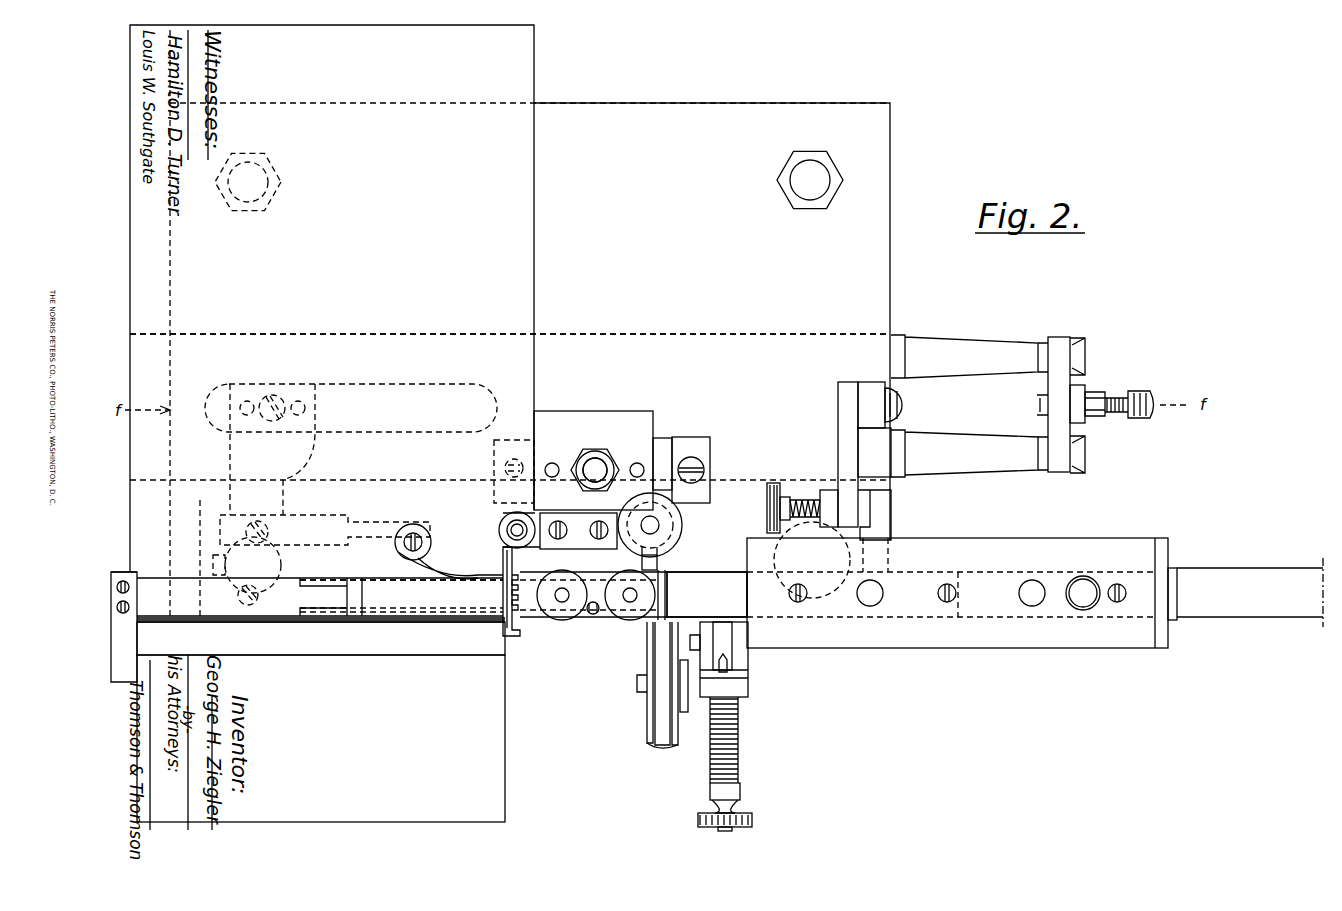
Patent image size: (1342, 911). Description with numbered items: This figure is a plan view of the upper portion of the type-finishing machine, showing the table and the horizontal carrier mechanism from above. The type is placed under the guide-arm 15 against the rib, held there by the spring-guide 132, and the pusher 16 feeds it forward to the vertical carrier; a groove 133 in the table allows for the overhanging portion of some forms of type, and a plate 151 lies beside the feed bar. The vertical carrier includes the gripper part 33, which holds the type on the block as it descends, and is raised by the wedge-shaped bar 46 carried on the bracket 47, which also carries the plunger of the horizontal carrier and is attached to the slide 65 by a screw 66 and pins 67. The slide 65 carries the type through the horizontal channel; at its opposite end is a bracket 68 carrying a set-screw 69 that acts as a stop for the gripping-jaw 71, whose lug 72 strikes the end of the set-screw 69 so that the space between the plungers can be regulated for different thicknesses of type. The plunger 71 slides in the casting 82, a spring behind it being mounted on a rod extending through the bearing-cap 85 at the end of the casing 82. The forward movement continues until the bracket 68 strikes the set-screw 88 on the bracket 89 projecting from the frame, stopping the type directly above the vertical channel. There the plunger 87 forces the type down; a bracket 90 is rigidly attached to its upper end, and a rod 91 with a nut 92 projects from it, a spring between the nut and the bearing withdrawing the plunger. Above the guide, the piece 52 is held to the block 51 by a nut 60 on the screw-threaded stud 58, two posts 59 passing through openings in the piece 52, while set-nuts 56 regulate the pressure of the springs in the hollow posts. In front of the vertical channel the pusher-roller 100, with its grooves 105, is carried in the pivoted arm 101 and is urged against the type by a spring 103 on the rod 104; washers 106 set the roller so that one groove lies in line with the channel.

The slide 65 is at (510, 321).
The screw 66 is at (268, 396).
The pins 67 is at (247, 415).
The bracket 47 is at (272, 449).
The wedge-shaped bar 46 is at (390, 525).
The spring-guide 132 is at (444, 551).
The pusher 16 is at (307, 627).
The guide-arm 15 is at (401, 596).
The groove 133 is at (315, 620).
The plate 151 is at (321, 638).
The gripper part of the vertical carrier 33 is at (505, 555).
The piece 52 is at (583, 460).
The block 51 is at (691, 469).
The posts 59 is at (586, 463).
The nut 60 is at (583, 485).
The screw-threaded stud 58 is at (593, 458).
The nut 92 is at (662, 531).
The rod 91 is at (656, 528).
The plunger 87 is at (666, 558).
The bracket 90 is at (668, 586).
The set-nuts 56 is at (575, 583).
The gripping-jaw (plunger) 71 is at (911, 593).
The casting 82 is at (957, 585).
The bearing-cap 85 is at (1218, 580).
The pusher-roller 100 is at (645, 654).
The washers 106 is at (684, 702).
The grooves 105 is at (660, 743).
The arm 101 is at (748, 689).
The rod 104 is at (730, 668).
The spring 103 is at (742, 737).
The bracket 68 is at (867, 454).
The lug 72 is at (885, 507).
The set-screw 69 is at (800, 494).
The bracket 89 is at (1005, 368).
The set-screw 88 is at (1112, 398).